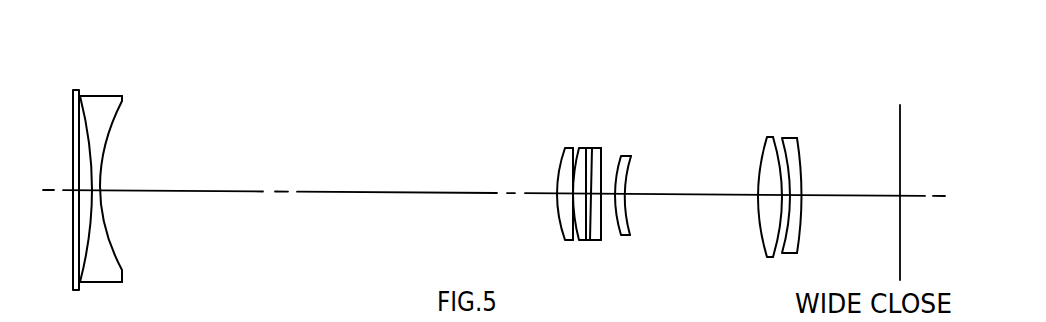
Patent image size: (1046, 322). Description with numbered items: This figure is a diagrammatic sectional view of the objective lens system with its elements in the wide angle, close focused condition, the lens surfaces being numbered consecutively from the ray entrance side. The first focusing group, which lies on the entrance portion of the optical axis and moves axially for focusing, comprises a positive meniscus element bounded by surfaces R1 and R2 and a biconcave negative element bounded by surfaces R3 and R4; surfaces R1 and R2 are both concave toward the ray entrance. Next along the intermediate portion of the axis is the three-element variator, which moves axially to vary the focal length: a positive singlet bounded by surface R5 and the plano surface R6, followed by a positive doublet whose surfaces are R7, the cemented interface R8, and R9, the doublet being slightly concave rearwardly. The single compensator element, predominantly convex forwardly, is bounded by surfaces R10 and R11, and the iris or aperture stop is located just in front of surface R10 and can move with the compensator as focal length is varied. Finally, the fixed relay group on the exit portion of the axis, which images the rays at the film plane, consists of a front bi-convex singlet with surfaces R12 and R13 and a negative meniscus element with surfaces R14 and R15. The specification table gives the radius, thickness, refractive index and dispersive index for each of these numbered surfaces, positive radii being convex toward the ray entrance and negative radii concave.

The first lens surface R1 is at (74, 112).
The second lens surface R2 is at (87, 121).
The third lens surface R3 is at (88, 125).
The fourth lens surface R4 is at (107, 155).
The fifth lens surface R5 is at (563, 153).
The sixth lens surface R6 is at (574, 167).
The seventh lens surface R7 is at (578, 163).
The eighth lens surface R8 is at (592, 166).
The ninth lens surface R9 is at (601, 161).
The tenth lens surface R10 is at (622, 156).
The eleventh lens surface R11 is at (626, 182).
The twelfth lens surface R12 is at (762, 143).
The thirteenth lens surface R13 is at (780, 140).
The fourteenth lens surface R14 is at (788, 161).
The fifteenth lens surface R15 is at (802, 173).